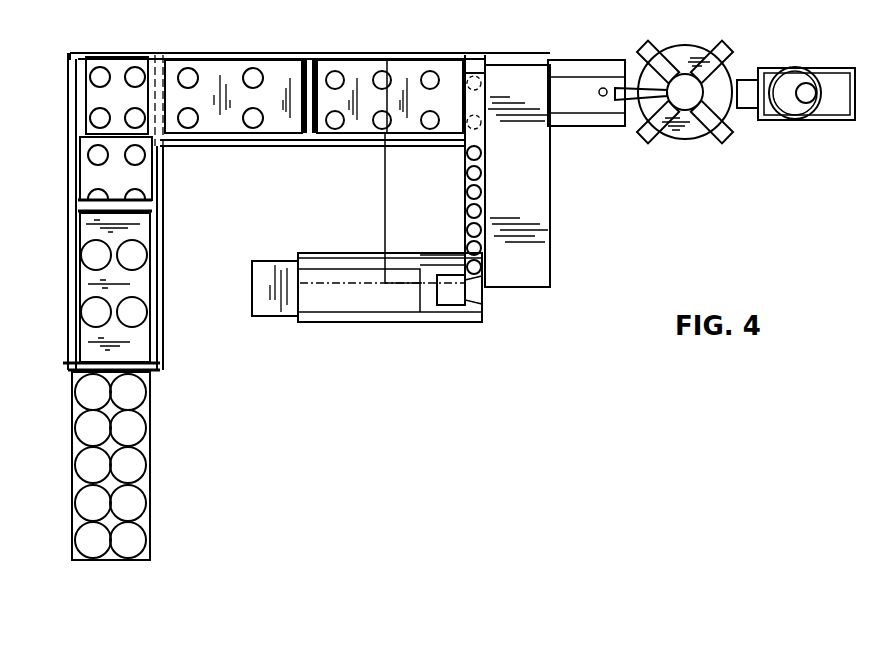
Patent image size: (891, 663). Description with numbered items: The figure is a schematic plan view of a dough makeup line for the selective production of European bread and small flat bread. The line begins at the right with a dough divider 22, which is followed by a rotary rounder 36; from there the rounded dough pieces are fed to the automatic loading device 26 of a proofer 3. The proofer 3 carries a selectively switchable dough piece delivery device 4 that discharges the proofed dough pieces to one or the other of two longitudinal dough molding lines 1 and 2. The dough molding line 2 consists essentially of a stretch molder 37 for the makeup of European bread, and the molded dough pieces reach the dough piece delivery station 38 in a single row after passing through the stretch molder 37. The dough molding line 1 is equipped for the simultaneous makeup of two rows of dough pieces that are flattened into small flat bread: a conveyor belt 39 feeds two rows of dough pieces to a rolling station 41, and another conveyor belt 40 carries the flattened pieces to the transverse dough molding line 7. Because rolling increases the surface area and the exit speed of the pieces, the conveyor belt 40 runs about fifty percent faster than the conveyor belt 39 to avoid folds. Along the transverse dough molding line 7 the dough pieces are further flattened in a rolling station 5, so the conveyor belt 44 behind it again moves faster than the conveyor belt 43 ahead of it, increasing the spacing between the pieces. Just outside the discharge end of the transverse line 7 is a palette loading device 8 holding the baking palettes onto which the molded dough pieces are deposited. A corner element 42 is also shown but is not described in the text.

The longitudinal dough molding line 1 is at (260, 52).
The longitudinal dough molding line 2 is at (351, 323).
The proofer 3 is at (535, 219).
The dough piece delivery device 4 is at (482, 178).
The rolling station 5 is at (83, 202).
The transverse dough molding line 7 is at (70, 280).
The palette loading device 8 is at (77, 360).
The dough divider 22 is at (823, 67).
The automatic loading device 26 is at (578, 60).
The rotary rounder 36 is at (690, 43).
The stretch molder 37 is at (404, 296).
The dough piece delivery station 38 is at (288, 296).
The conveyor belt 39 is at (367, 67).
The conveyor belt 40 is at (213, 77).
The rolling station 41 is at (310, 62).
The corner pallet 42 is at (117, 68).
The conveyor belt 43 is at (87, 170).
The conveyor belt 44 is at (90, 233).